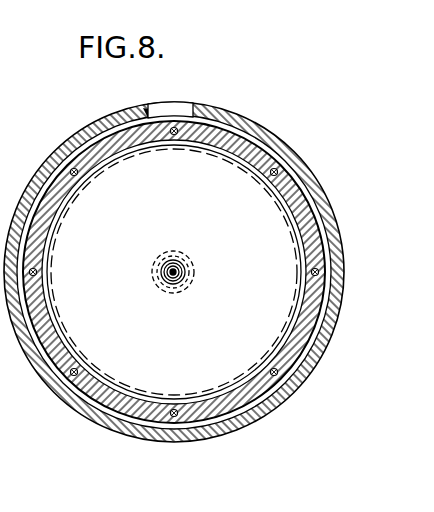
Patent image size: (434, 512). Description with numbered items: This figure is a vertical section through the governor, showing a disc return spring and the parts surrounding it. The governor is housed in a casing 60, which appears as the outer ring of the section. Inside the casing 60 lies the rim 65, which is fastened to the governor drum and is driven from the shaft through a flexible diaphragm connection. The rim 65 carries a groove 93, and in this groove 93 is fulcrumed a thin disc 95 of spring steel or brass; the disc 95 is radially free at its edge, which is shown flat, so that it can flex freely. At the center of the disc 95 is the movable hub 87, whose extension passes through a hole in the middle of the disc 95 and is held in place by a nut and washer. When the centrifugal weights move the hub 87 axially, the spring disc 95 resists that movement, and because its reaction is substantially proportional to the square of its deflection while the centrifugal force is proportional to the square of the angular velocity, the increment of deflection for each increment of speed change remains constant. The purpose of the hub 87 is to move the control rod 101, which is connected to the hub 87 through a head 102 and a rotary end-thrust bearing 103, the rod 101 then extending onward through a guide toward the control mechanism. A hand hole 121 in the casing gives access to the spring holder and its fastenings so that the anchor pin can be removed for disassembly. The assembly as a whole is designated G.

The outer ring 60 is at (252, 122).
The inner clamping ring 65 is at (97, 152).
The circular dashed boundary 93 is at (62, 212).
The disk 95 is at (133, 378).
The central shaft 87 is at (162, 285).
The hub sleeve 101 is at (183, 283).
The hub ring 102 is at (182, 266).
The hub outer boundary 103 is at (163, 266).
The tab 121 is at (145, 112).
The assembly G is at (305, 158).